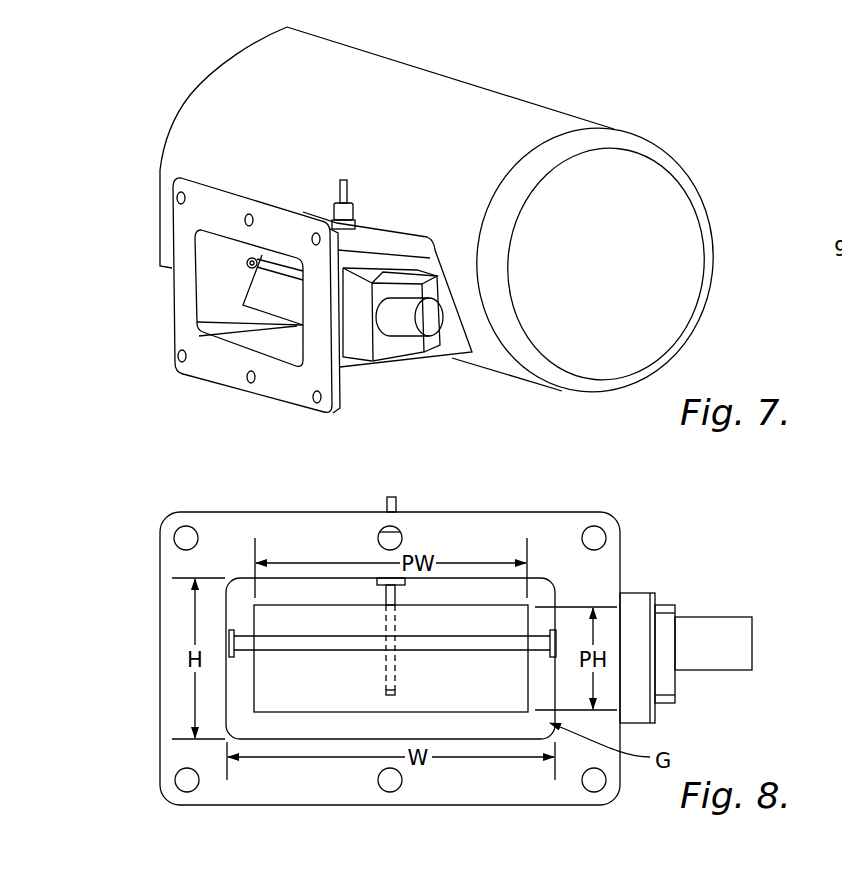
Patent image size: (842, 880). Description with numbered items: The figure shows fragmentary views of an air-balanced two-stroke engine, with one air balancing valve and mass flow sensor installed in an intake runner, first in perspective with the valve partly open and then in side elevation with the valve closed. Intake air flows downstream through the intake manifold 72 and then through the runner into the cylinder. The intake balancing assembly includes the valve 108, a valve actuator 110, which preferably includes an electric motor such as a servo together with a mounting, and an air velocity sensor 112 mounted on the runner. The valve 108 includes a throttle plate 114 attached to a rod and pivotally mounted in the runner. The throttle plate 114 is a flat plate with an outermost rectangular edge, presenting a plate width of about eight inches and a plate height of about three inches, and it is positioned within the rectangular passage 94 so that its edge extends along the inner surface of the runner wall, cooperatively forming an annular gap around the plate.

In FIG. 7, the intake manifold 72 is at (478, 94).
In FIG. 7, the valve 108 is at (208, 385).
In FIG. 7, the valve actuator 110 is at (397, 342).
In FIG. 8, the valve actuator 110 is at (692, 627).
In FIG. 7, the air velocity sensor 112 is at (349, 212).
In FIG. 7, the throttle plate 114 is at (262, 295).
In FIG. 8, the passage 94 is at (230, 600).